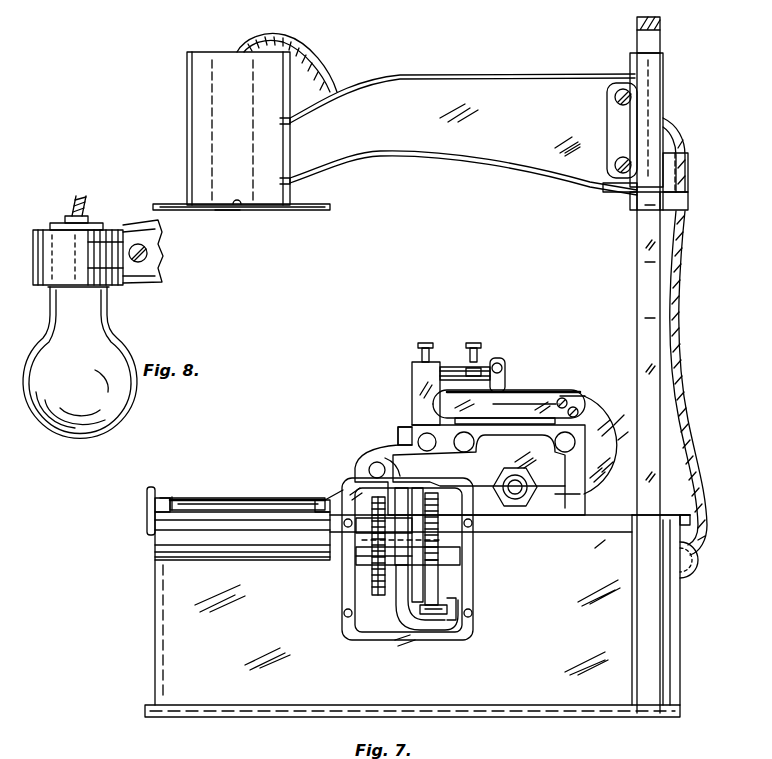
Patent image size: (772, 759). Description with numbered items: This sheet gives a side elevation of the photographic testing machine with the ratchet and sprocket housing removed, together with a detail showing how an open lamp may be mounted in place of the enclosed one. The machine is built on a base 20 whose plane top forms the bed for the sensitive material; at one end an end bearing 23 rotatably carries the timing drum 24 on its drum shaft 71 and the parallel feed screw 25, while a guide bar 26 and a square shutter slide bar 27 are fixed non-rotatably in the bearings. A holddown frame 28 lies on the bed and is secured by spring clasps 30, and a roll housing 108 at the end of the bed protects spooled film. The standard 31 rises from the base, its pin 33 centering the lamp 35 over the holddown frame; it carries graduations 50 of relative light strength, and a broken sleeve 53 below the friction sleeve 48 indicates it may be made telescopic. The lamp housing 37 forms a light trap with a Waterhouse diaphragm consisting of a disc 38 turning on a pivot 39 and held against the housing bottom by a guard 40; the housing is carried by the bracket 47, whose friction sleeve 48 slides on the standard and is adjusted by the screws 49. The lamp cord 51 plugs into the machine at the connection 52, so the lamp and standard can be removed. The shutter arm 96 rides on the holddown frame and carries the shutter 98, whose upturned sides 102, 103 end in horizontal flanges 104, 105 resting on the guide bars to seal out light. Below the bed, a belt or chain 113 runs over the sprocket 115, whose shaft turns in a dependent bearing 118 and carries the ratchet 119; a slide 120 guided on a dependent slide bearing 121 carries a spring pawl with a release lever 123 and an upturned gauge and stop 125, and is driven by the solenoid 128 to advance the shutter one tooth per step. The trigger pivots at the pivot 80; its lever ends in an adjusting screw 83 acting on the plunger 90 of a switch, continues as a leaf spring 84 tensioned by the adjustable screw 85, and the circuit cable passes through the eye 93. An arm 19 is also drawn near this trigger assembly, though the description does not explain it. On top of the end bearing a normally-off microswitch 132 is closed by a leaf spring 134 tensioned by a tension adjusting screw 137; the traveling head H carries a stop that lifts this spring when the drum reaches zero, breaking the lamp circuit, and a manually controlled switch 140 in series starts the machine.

In FIG. 7, the arm 19 is at (505, 390).
In FIG. 7, the base 20 is at (163, 609).
In FIG. 7, the end bearing 23 is at (560, 492).
In FIG. 7, the timing drum 24 is at (617, 421).
In FIG. 7, the feed screw 25 is at (465, 450).
In FIG. 7, the guide bar 26 is at (424, 438).
In FIG. 7, the shutter slide bar 27 is at (376, 466).
In FIG. 7, the holddown frame 28 is at (160, 500).
In FIG. 7, the spring clasp 30 is at (150, 516).
In FIG. 7, the standard 31 is at (648, 290).
In FIG. 7, the pin 33 is at (685, 514).
In FIG. 8, the lamp 35 is at (125, 350).
In FIG. 7, the lamp housing 37 is at (186, 126).
In FIG. 7, the disc 38 is at (330, 207).
In FIG. 7, the pivot 39 is at (240, 207).
In FIG. 7, the guard 40 is at (230, 211).
In FIG. 7, the bracket 47 is at (440, 92).
In FIG. 7, the friction sleeve 48 is at (652, 110).
In FIG. 7, the screws 49 is at (620, 92).
In FIG. 7, the graduations 50 is at (645, 218).
In FIG. 8, the lamp cord 51 is at (76, 204).
In FIG. 7, the lamp cord 51 is at (690, 415).
In FIG. 7, the plug connection 52 is at (692, 572).
In FIG. 7, the broken sleeve 53 is at (629, 203).
In FIG. 7, the drum shaft 71 is at (592, 412).
In FIG. 7, the trigger pivot 80 is at (498, 358).
In FIG. 7, the adjusting screw 83 is at (474, 344).
In FIG. 7, the leaf spring 84 is at (452, 366).
In FIG. 7, the adjustable screw 85 is at (424, 344).
In FIG. 7, the plunger 90 is at (411, 378).
In FIG. 7, the eye 93 is at (397, 434).
In FIG. 7, the shutter arm 96 is at (215, 497).
In FIG. 7, the shutter 98 is at (182, 500).
In FIG. 7, the side 102 is at (172, 496).
In FIG. 7, the side 103 is at (320, 497).
In FIG. 7, the horizontal flange 104 is at (165, 496).
In FIG. 7, the horizontal flange 105 is at (323, 495).
In FIG. 7, the roll housing 108 is at (190, 535).
In FIG. 7, the belt or chain 113 is at (372, 572).
In FIG. 7, the sprocket 115 is at (375, 585).
In FIG. 7, the dependent bearing 118 is at (372, 548).
In FIG. 7, the ratchet 119 is at (440, 540).
In FIG. 7, the slide 120 is at (448, 612).
In FIG. 7, the dependent slide bearing 121 is at (456, 622).
In FIG. 7, the release lever 123 is at (415, 620).
In FIG. 7, the gauge and stop 125 is at (440, 575).
In FIG. 7, the solenoid 128 is at (432, 632).
In FIG. 7, the microswitch 132 is at (558, 392).
In FIG. 7, the leaf spring 134 is at (533, 400).
In FIG. 7, the tension adjusting screw 137 is at (566, 398).
In FIG. 7, the manually controlled switch 140 is at (510, 477).
In FIG. 7, the traveling head H is at (400, 359).